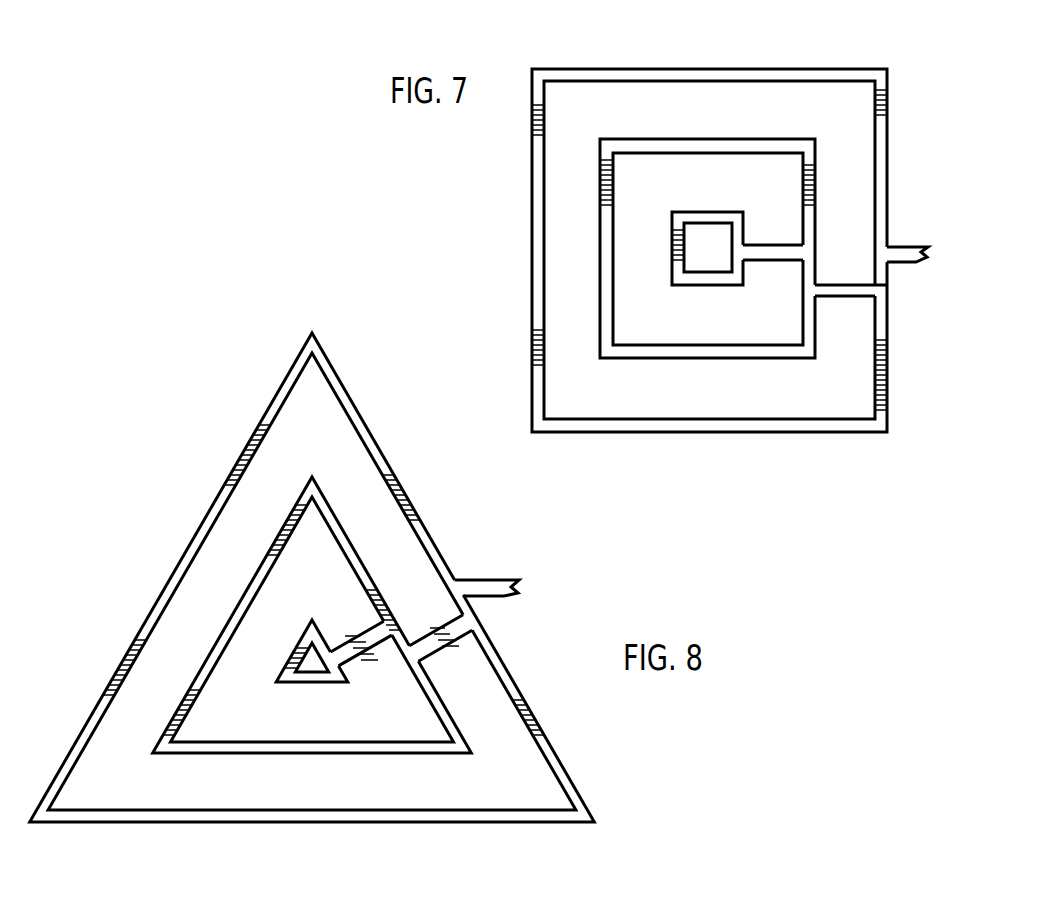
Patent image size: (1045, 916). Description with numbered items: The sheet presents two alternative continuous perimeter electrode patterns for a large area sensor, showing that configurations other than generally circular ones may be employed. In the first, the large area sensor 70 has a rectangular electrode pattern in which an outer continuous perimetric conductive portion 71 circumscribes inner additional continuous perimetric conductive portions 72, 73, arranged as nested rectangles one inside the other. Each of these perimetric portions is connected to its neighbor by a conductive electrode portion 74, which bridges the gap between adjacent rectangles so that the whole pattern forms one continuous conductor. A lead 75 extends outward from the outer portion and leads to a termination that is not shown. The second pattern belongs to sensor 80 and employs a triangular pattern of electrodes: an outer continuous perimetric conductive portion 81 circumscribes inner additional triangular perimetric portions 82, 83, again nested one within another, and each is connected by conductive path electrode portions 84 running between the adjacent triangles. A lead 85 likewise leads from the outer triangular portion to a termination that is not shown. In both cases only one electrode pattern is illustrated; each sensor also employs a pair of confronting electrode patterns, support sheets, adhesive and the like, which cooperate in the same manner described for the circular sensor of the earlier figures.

In FIG. 7, the large area sensor 70 is at (732, 251).
In FIG. 7, the outer continuous perimetric conductive portion 71 is at (658, 432).
In FIG. 7, the inner additional continuous perimetric conductive portion 72 is at (628, 146).
In FIG. 7, the inner additional continuous perimetric conductive portion 73 is at (697, 212).
In FIG. 7, the conductive electrode portion 74 is at (762, 252).
In FIG. 7, the lead 75 is at (904, 254).
In FIG. 8, the sensor 80 is at (330, 608).
In FIG. 8, the outer continuous perimetric conductive portion 81 is at (557, 753).
In FIG. 8, the inner additional triangular perimetric portion 82 is at (428, 750).
In FIG. 8, the inner additional triangular perimetric portion 83 is at (327, 683).
In FIG. 8, the conductive path electrode portion 84 is at (347, 639).
In FIG. 8, the lead 85 is at (494, 592).